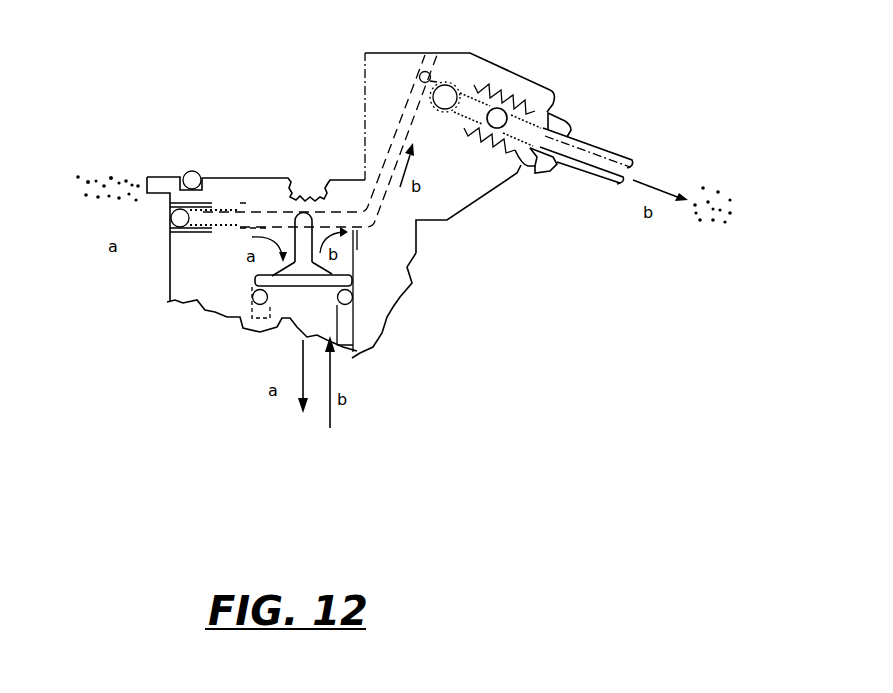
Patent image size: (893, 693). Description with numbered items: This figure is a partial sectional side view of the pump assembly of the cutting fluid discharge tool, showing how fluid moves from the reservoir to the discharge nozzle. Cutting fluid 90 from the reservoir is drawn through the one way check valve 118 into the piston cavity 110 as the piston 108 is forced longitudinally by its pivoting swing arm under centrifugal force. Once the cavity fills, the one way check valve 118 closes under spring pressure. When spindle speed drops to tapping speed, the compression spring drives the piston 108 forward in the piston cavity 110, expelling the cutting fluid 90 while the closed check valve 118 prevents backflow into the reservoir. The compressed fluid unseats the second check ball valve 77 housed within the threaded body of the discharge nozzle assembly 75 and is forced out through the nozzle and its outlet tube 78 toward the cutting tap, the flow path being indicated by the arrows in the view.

The discharge nozzle assembly 75 is at (585, 86).
The ball valve 77 is at (496, 116).
The outlet tube 78 is at (606, 150).
The cutting fluid 90 is at (85, 177).
The piston 108 is at (313, 271).
The piston cavity 110 is at (293, 318).
The one way check valve 118 is at (145, 219).